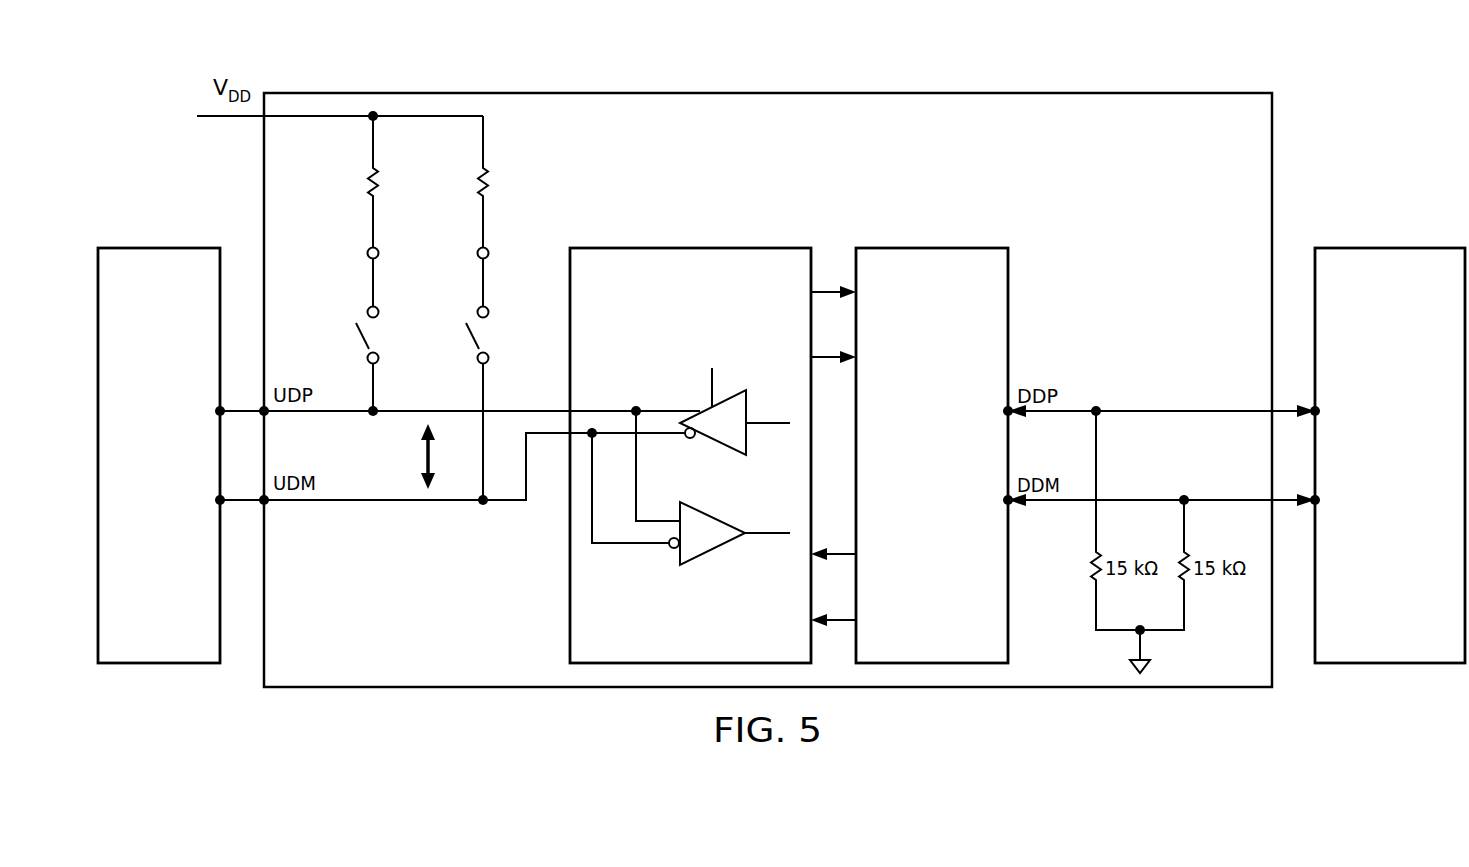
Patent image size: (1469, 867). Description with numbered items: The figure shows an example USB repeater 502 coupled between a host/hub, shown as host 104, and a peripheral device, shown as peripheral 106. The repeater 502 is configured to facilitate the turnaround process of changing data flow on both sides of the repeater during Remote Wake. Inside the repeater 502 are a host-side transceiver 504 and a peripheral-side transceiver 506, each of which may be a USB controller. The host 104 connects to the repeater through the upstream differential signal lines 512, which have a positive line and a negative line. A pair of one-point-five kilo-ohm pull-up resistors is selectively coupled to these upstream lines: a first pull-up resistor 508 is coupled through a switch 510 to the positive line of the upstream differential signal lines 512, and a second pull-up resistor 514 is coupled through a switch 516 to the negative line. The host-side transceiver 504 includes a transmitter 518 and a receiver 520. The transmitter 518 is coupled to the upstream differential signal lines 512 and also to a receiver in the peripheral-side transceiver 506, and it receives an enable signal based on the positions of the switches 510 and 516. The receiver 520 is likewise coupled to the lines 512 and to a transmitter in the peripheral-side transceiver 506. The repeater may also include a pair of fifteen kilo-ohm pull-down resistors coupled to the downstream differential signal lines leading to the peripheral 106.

The repeater 502 is at (635, 93).
The host-side transceiver 504 is at (637, 247).
The peripheral-side transceiver 506 is at (975, 247).
The first 1.5 kΩ pull-up resistor 508 is at (368, 181).
The switch 510 is at (358, 340).
The upstream differential signal lines 512 is at (420, 458).
The second 1.5 kΩ pull-up resistor 514 is at (478, 181).
The switch 516 is at (468, 340).
The transmitter 518 is at (720, 448).
The receiver 520 is at (718, 548).
The host 104 is at (158, 247).
The peripheral 106 is at (1392, 247).